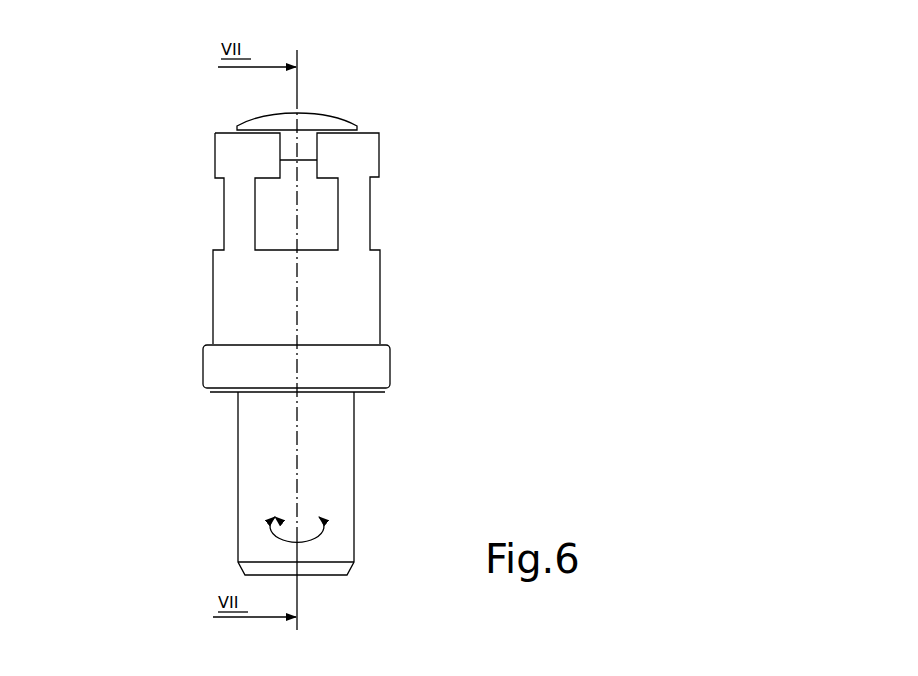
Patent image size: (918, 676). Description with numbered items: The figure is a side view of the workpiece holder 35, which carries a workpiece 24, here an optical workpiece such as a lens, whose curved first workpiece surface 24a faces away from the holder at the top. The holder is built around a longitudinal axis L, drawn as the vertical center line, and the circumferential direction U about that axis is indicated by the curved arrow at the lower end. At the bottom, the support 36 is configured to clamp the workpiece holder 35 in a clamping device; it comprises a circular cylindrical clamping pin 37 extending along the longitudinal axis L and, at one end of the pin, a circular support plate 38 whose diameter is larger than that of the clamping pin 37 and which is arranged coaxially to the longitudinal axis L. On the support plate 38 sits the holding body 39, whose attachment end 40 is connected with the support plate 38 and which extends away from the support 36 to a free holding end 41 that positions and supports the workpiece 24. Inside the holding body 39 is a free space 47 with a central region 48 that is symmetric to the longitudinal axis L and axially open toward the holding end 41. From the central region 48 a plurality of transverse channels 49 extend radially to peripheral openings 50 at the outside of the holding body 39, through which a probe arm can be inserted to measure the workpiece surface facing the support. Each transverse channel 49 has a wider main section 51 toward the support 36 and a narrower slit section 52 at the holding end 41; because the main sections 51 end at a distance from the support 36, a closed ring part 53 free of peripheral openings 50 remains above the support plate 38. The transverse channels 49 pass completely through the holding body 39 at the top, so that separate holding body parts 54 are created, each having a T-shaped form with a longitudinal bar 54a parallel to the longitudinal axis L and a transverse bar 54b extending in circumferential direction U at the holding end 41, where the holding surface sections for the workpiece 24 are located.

The workpiece 24 is at (258, 143).
The first workpiece surface 24a is at (325, 113).
The workpiece holder 35 is at (470, 170).
The support 36 is at (405, 367).
The clamping pin 37 is at (247, 442).
The support plate 38 is at (217, 358).
The holding body 39 is at (432, 248).
The attachment end 40 is at (385, 345).
The holding end 41 is at (375, 125).
The free space 47 is at (280, 230).
The central region 48 is at (330, 215).
The transverse channel 49 is at (215, 198).
The peripheral opening 50 is at (224, 238).
The main section 51 is at (280, 198).
The slit section 52 is at (305, 138).
The ring part 53 is at (228, 333).
The holding body part 54 is at (243, 236).
The longitudinal bar 54a is at (235, 191).
The transverse bar 54b is at (235, 159).
The longitudinal axis L is at (297, 445).
The circumferential direction U is at (318, 540).